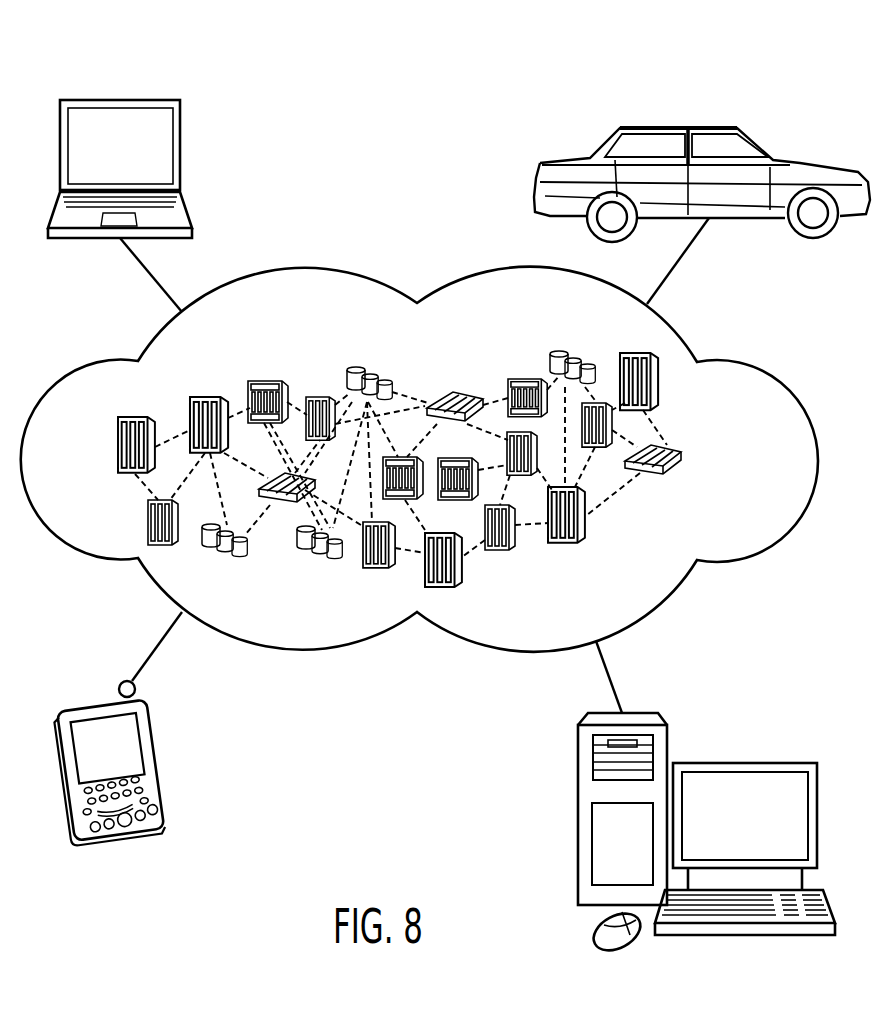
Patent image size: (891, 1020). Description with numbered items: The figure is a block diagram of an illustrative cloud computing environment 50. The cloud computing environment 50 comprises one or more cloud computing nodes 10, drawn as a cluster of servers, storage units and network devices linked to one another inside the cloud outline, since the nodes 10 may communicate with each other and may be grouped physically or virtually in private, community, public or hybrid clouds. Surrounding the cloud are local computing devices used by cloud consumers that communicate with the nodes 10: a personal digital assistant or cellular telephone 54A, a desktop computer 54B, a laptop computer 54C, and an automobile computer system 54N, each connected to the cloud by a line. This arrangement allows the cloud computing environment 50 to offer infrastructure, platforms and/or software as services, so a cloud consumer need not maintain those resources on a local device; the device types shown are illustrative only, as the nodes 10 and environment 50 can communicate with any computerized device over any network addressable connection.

The cloud computing node 10 is at (700, 460).
The cloud computing environment 50 is at (758, 367).
The personal digital assistant or cellular telephone 54A is at (100, 698).
The desktop computer 54B is at (743, 760).
The laptop computer 54C is at (118, 98).
The automobile computer system 54N is at (682, 125).